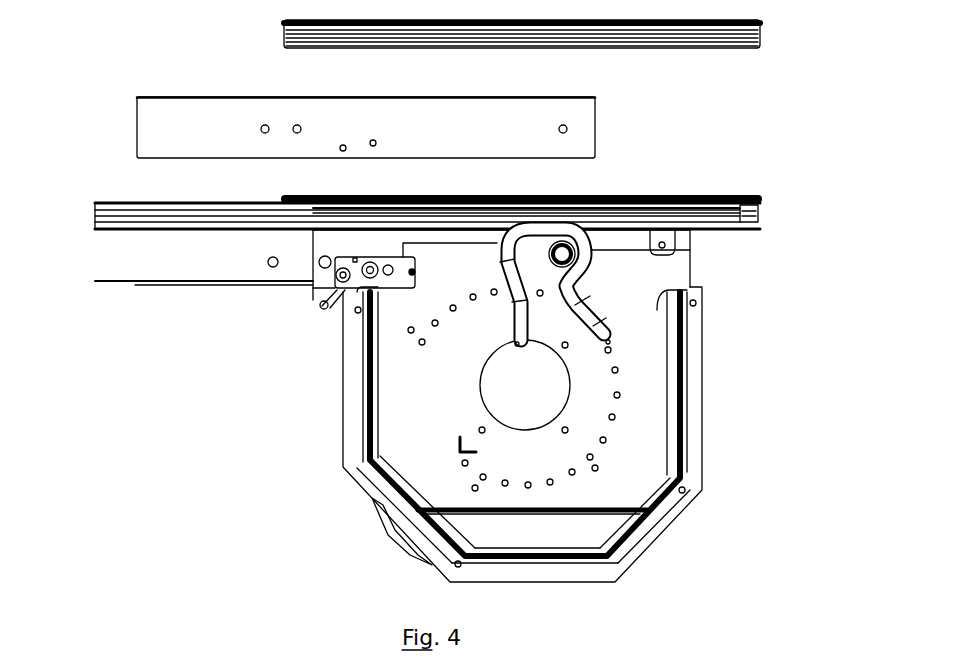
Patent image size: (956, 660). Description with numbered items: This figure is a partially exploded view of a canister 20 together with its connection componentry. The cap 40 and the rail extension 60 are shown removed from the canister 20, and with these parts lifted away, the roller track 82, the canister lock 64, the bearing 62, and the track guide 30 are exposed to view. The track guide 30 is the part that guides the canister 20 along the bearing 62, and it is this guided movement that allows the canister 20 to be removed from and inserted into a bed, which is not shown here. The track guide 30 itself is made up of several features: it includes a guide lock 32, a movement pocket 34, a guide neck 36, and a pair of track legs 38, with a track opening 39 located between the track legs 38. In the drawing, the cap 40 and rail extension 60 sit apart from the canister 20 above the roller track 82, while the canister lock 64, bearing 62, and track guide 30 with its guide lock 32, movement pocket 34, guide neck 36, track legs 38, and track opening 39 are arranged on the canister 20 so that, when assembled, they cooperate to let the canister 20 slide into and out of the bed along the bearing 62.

The canister 20 is at (652, 528).
The track guide 30 is at (655, 353).
The guide lock 32 is at (608, 238).
The movement pocket 34 is at (485, 248).
The guide neck 36 is at (588, 293).
The track legs 38 is at (608, 342).
The track opening 39 is at (567, 372).
The cap 40 is at (765, 35).
The rail extension 60 is at (565, 104).
The bearing 62 is at (576, 250).
The canister lock 64 is at (273, 320).
The roller track 82 is at (122, 250).